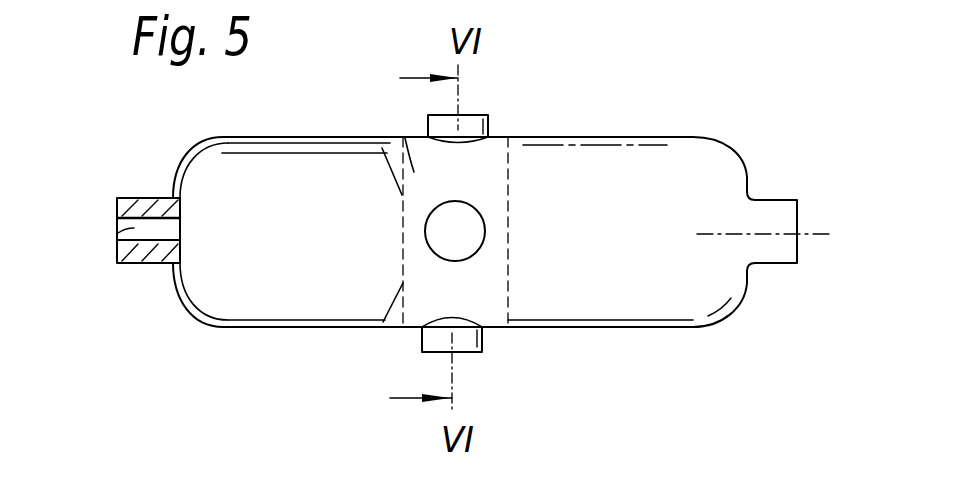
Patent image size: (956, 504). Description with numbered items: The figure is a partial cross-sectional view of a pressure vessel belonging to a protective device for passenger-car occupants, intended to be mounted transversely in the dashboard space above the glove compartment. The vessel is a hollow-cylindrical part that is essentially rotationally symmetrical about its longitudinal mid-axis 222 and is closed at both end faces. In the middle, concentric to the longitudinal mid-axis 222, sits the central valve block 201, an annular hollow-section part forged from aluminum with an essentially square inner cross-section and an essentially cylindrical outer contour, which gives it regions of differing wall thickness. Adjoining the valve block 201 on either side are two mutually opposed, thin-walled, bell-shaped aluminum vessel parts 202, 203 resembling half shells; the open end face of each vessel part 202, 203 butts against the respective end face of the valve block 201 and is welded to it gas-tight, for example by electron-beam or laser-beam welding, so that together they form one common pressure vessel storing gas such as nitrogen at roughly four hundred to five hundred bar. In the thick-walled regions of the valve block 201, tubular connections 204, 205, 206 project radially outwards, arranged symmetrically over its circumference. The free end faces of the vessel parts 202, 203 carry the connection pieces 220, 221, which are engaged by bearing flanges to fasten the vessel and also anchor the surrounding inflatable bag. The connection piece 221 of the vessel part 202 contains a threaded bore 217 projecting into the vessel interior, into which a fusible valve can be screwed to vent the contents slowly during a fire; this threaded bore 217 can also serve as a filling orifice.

The valve block 201 is at (397, 133).
The vessel part 202 is at (285, 328).
The vessel part 203 is at (620, 307).
The tubular connection 204 is at (490, 125).
The tubular connection 205 is at (477, 343).
The tubular connection 206 is at (467, 227).
The threaded bore 217 is at (115, 240).
The connection piece 220 is at (787, 195).
The connection piece 221 is at (138, 197).
The longitudinal mid-axis 222 is at (817, 236).